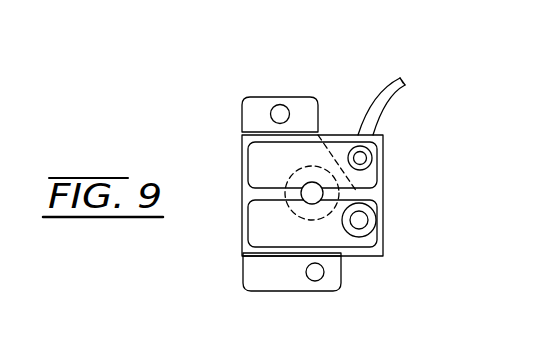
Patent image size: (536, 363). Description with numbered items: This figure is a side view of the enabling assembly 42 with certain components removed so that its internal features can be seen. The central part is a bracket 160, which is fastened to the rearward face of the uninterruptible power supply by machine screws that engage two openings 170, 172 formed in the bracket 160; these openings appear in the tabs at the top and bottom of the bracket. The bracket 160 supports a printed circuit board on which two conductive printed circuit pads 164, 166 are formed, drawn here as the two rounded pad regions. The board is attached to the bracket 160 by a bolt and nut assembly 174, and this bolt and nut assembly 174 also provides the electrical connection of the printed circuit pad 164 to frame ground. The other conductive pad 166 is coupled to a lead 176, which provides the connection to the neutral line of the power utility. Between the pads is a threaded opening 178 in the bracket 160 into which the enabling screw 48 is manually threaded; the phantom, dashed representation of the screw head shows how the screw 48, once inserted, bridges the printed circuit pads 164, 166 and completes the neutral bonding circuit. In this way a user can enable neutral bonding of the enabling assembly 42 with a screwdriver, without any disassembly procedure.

The enabling assembly 42 is at (352, 65).
The enabling screw 48 is at (293, 170).
The bracket 160 is at (257, 105).
The printed circuit pad 164 is at (368, 178).
The conductive pad 166 is at (340, 240).
The opening 170 is at (287, 105).
The opening 172 is at (313, 281).
The bolt and nut assembly 174 is at (368, 218).
The lead 176 is at (363, 156).
The threaded opening 178 is at (306, 205).